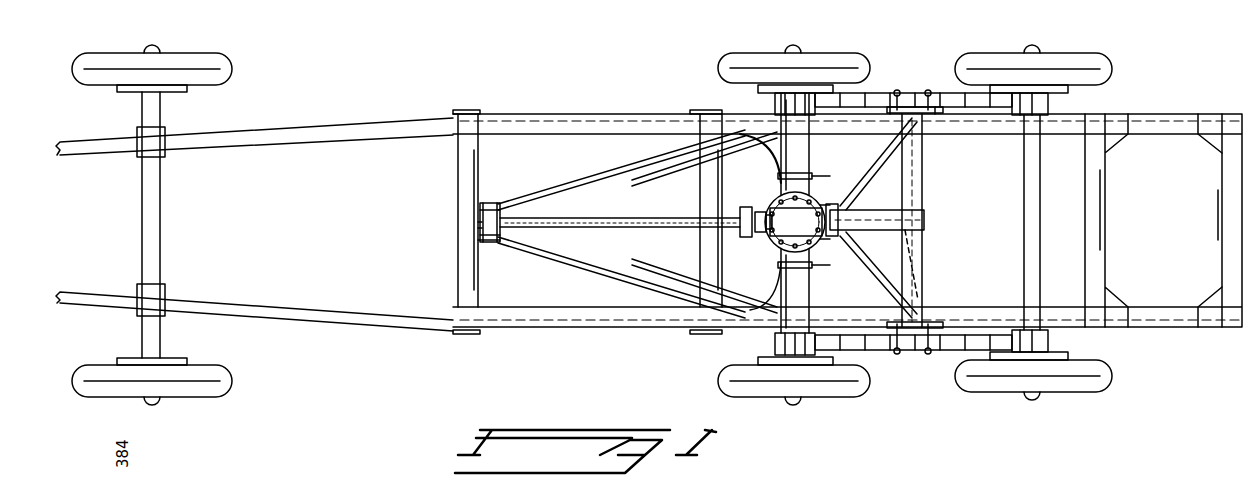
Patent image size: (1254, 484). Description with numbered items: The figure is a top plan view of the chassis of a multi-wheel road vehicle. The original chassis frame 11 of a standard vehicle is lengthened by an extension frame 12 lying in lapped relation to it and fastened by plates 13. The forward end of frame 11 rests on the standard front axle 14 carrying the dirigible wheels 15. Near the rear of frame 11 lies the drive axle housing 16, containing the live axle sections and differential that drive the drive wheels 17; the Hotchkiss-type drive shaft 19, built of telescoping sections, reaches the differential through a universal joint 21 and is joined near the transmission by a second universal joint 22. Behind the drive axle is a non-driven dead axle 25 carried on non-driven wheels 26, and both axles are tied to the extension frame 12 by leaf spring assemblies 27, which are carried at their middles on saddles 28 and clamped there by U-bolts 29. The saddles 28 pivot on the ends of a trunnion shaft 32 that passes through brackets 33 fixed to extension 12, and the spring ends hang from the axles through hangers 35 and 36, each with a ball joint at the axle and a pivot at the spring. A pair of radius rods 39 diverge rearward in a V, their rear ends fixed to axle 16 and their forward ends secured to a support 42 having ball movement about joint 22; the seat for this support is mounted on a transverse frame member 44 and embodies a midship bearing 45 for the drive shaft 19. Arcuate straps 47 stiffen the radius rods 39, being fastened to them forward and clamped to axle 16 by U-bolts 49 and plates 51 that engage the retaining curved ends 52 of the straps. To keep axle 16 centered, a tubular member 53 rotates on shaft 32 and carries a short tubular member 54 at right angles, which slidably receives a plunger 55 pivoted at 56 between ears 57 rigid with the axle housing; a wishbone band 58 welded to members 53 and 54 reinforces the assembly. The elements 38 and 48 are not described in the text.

The chassis frame 11 is at (343, 288).
The extension frame 12 is at (970, 140).
The plates 13 is at (482, 111).
The front axle 14 is at (153, 264).
The dirigible wheels 15 is at (232, 77).
The drive axle housing 16 is at (800, 252).
The drive wheels 17 is at (720, 62).
The drive shaft 19 is at (612, 219).
The universal joint 21 is at (744, 208).
The universal joint 22 is at (496, 206).
The dead axle 25 is at (852, 200).
The non-driven wheels 26 is at (1105, 75).
The leaf spring assemblies 27 is at (895, 108).
The saddles 28 is at (898, 323).
The U-bolts 29 is at (925, 92).
The trunnion shaft 32 is at (922, 250).
The brackets 33 is at (912, 110).
The hangers 35 is at (775, 104).
The hangers 36 is at (1048, 125).
The leaf spring 38 is at (945, 95).
The radius rods 39 is at (580, 188).
The support 42 is at (495, 243).
The transverse member 44 is at (462, 196).
The midship bearing 45 is at (479, 228).
The arcuate straps 47 is at (780, 170).
The radius rod 48 is at (700, 170).
The U-bolts 49 is at (812, 175).
The plates 51 is at (772, 150).
The curved ends 52 is at (762, 211).
The tubular member 53 is at (903, 135).
The tubular member 54 is at (924, 218).
The plunger 55 is at (838, 205).
The pivotal connection 56 is at (1048, 338).
The ears 57 is at (810, 200).
The wishbone band 58 is at (840, 212).